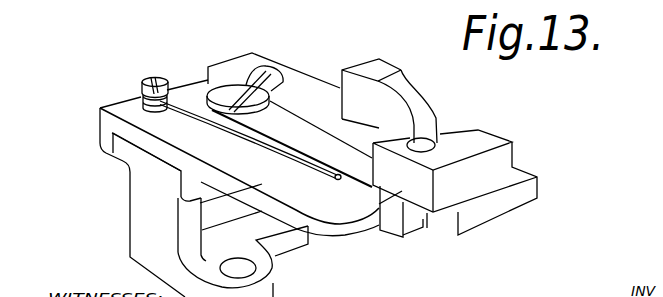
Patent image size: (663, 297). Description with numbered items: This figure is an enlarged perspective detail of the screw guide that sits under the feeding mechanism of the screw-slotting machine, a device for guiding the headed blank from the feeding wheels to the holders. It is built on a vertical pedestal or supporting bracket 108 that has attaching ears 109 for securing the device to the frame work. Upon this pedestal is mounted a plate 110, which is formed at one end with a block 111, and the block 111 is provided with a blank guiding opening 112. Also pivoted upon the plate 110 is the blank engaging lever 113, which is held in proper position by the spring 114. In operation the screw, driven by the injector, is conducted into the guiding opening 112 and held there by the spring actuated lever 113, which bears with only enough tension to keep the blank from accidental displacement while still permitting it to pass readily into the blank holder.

The vertical pedestal or supporting bracket 108 is at (137, 198).
The attaching ears 109 is at (243, 268).
The plate 110 is at (97, 114).
The block 111 is at (502, 157).
The blank guiding opening 112 is at (437, 143).
The blank engaging lever 113 is at (282, 125).
The spring 114 is at (175, 106).